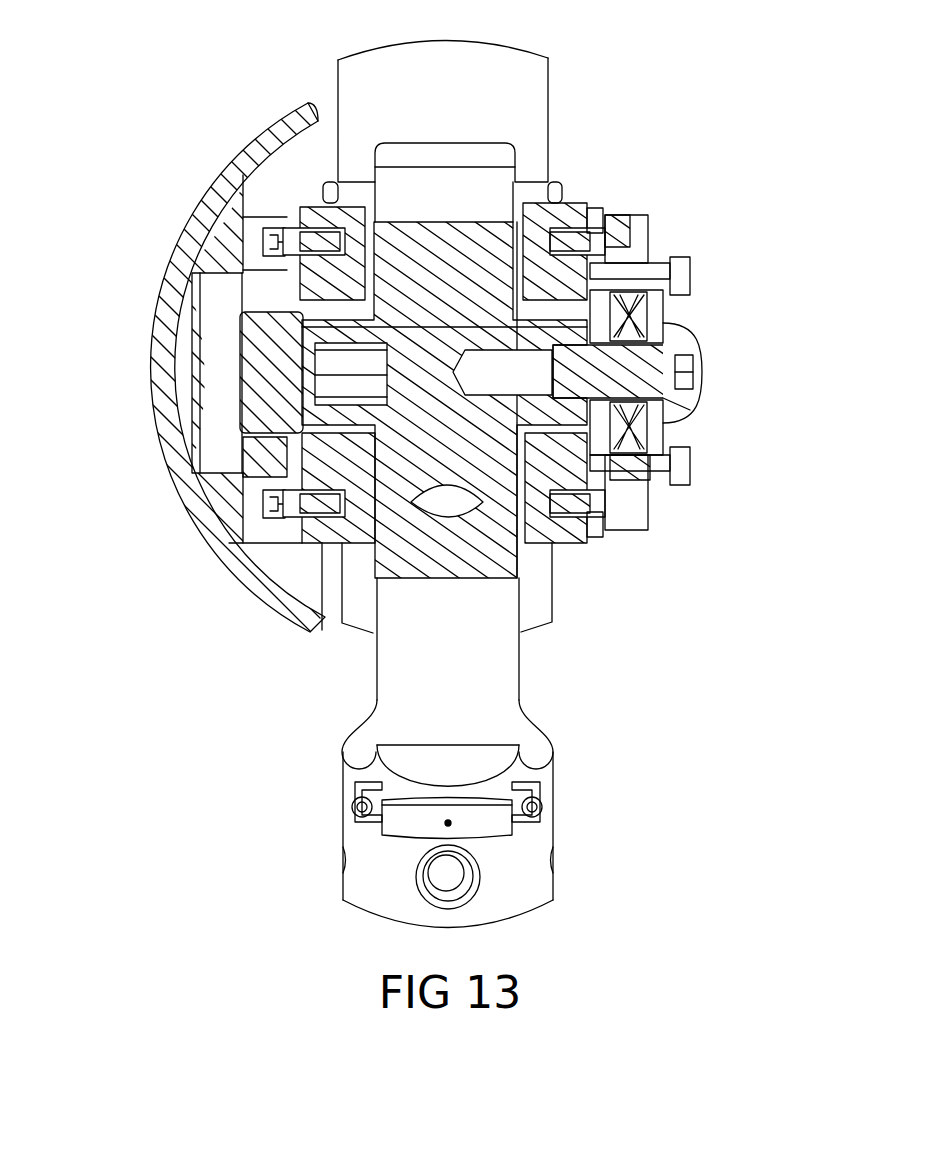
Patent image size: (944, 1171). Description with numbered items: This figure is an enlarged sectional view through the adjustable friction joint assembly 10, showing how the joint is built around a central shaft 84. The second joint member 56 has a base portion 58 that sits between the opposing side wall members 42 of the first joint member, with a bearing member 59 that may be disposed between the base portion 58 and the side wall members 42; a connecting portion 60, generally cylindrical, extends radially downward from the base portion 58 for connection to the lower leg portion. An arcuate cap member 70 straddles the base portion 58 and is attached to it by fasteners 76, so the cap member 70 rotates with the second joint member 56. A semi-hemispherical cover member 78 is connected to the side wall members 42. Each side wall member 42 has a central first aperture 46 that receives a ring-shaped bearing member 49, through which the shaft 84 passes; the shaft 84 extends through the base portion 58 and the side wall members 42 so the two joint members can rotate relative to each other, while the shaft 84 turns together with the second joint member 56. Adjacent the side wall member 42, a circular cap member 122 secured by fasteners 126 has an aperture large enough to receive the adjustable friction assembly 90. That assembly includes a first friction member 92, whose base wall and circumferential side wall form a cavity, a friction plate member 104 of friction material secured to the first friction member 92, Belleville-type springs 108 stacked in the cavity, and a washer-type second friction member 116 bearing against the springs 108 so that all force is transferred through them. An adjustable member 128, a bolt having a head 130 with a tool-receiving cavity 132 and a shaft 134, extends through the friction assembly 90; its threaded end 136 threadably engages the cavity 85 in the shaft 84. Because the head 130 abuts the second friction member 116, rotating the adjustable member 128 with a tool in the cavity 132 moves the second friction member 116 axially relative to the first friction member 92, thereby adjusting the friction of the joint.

The adjustable friction joint assembly 10 is at (715, 110).
The side wall members 42 is at (315, 530).
The first aperture 46 is at (318, 405).
The bearing member 49 is at (305, 493).
The second joint member 56 is at (520, 660).
The base portion 58 is at (437, 563).
The bearing member 59 is at (275, 262).
The connecting portion 60 is at (502, 678).
The cap member 70 is at (412, 40).
The fasteners 76 is at (273, 143).
The cover member 78 is at (217, 187).
The shaft 84 is at (337, 335).
The cavity 85 is at (630, 362).
The adjustable friction assembly 90 is at (620, 278).
The first friction member 92 is at (630, 462).
The friction plate member 104 is at (593, 277).
The springs 108 is at (630, 305).
The second friction member 116 is at (660, 427).
The cap member 122 is at (620, 480).
The fasteners 126 is at (570, 235).
The adjustable member 128 is at (693, 340).
The head 130 is at (680, 407).
The cavity 132 is at (700, 365).
The shaft 134 is at (700, 378).
The threaded end 136 is at (690, 270).